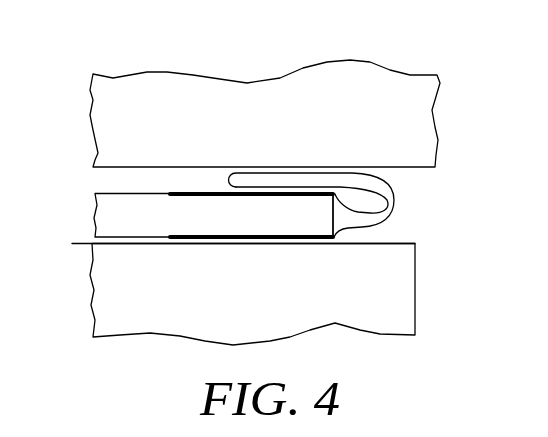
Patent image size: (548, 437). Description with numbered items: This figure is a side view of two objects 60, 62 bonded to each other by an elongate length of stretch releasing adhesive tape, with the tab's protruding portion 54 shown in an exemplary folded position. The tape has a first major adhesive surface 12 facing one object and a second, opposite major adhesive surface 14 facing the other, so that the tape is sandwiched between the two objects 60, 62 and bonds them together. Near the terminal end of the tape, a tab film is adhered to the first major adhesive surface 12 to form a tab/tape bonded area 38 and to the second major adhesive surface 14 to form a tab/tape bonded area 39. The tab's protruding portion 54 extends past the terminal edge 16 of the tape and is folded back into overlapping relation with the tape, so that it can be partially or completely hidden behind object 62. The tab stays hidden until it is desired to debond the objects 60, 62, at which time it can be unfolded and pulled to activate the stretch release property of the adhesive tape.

The first major adhesive surface 12 is at (105, 238).
The second major adhesive surface 14 is at (100, 193).
The terminal edge 16 is at (328, 208).
The tab/tape bonded area 38 is at (200, 239).
The tab/tape bonded area 39 is at (198, 191).
The protruding portion 54 is at (402, 195).
The object 60 is at (187, 87).
The object 62 is at (135, 325).